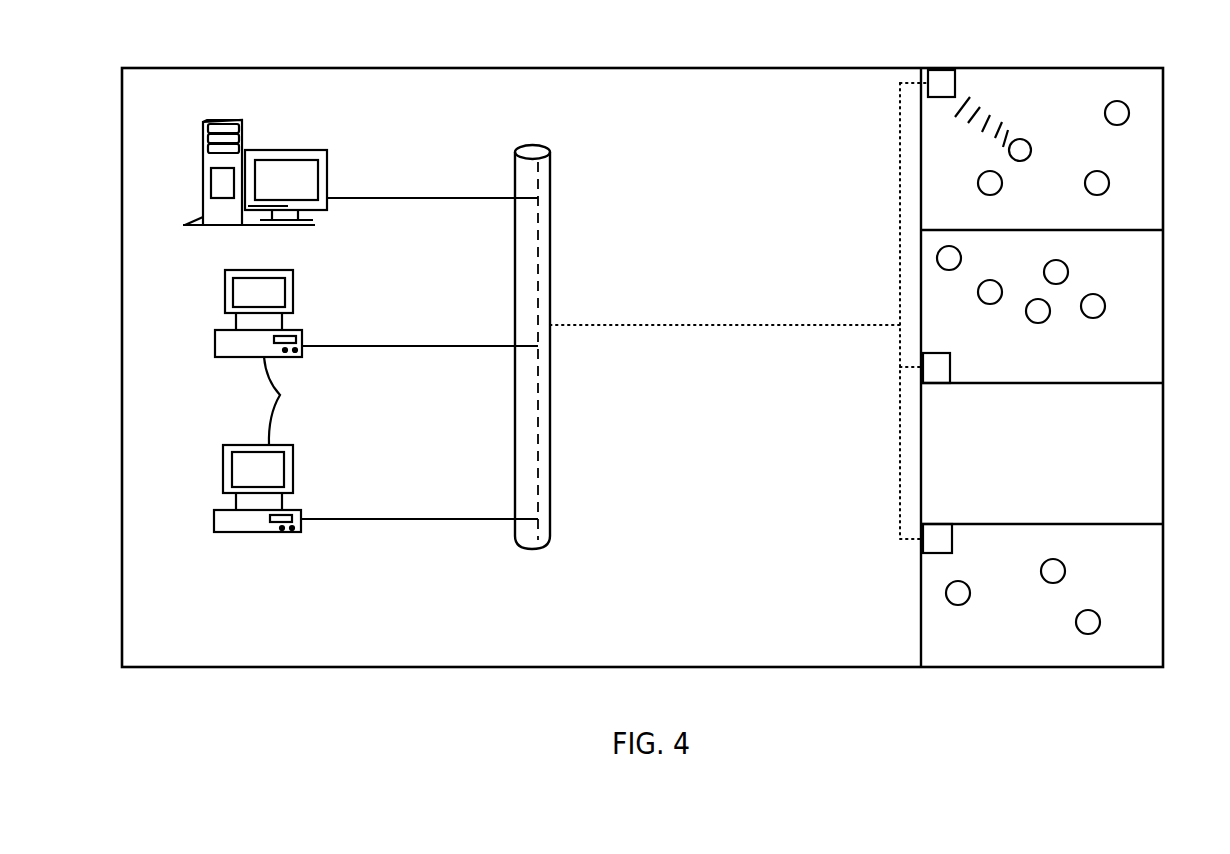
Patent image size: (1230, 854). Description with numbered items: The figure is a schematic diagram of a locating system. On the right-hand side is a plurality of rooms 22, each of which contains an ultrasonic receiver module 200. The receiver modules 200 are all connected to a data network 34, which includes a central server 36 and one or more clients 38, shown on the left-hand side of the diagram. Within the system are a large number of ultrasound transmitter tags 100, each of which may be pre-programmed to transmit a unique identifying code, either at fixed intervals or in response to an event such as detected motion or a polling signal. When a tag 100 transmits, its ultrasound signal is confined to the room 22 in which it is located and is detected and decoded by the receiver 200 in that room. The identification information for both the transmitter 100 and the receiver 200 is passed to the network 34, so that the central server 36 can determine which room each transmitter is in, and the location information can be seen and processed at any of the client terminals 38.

The room 22 is at (1070, 73).
The network 34 is at (527, 188).
The central server 36 is at (277, 150).
The client 38 is at (286, 401).
The ultrasound transmitter tag 100 is at (1031, 150).
The ultrasonic receiver module 200 is at (948, 84).